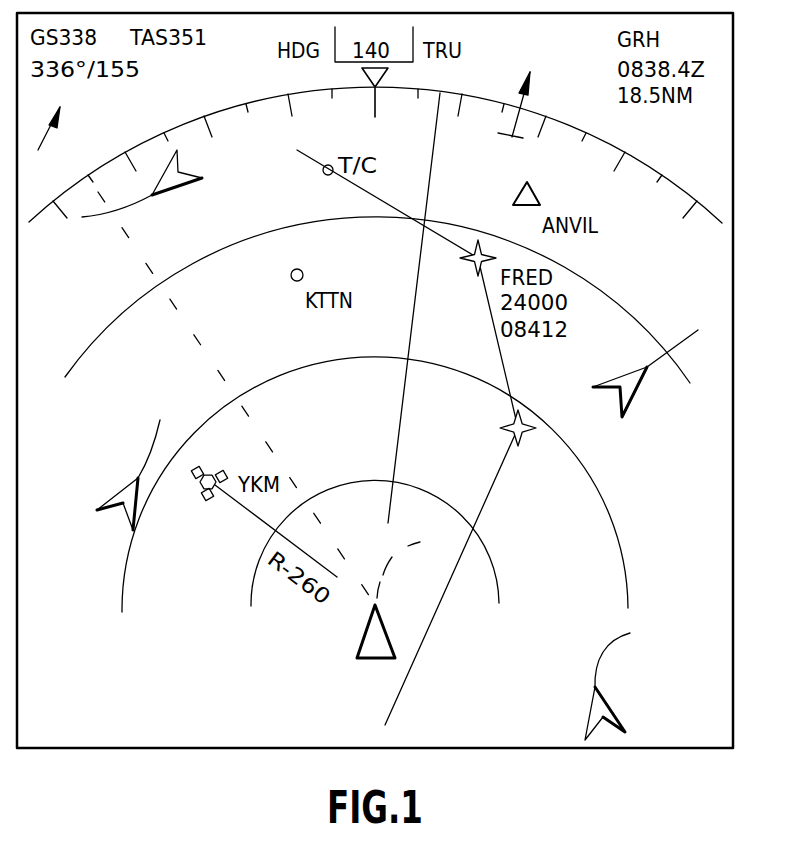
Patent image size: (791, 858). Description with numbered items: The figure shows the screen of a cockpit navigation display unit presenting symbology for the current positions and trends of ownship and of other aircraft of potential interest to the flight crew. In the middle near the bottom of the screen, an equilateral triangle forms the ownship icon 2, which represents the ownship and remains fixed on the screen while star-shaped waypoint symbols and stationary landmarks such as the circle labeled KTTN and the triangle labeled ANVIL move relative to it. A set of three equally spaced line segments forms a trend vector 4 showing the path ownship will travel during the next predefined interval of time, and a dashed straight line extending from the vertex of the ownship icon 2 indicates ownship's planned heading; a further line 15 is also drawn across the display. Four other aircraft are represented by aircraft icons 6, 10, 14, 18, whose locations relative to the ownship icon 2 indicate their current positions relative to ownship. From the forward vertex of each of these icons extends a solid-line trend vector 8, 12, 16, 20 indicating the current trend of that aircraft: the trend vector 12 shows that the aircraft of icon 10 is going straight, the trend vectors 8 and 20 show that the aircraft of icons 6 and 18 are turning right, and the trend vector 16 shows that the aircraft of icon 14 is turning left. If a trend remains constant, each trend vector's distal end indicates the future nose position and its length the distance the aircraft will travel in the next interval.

The ownship icon 2 is at (370, 630).
The trend vector 4 is at (388, 563).
The aircraft icon 6 is at (608, 700).
The trend vector 8 is at (600, 653).
The aircraft icon 10 is at (625, 372).
The trend vector 12 is at (692, 333).
The aircraft icon 14 is at (112, 498).
The heading line 15 is at (428, 308).
The trend vector 16 is at (157, 440).
The aircraft icon 18 is at (182, 189).
The trend vector 20 is at (83, 220).